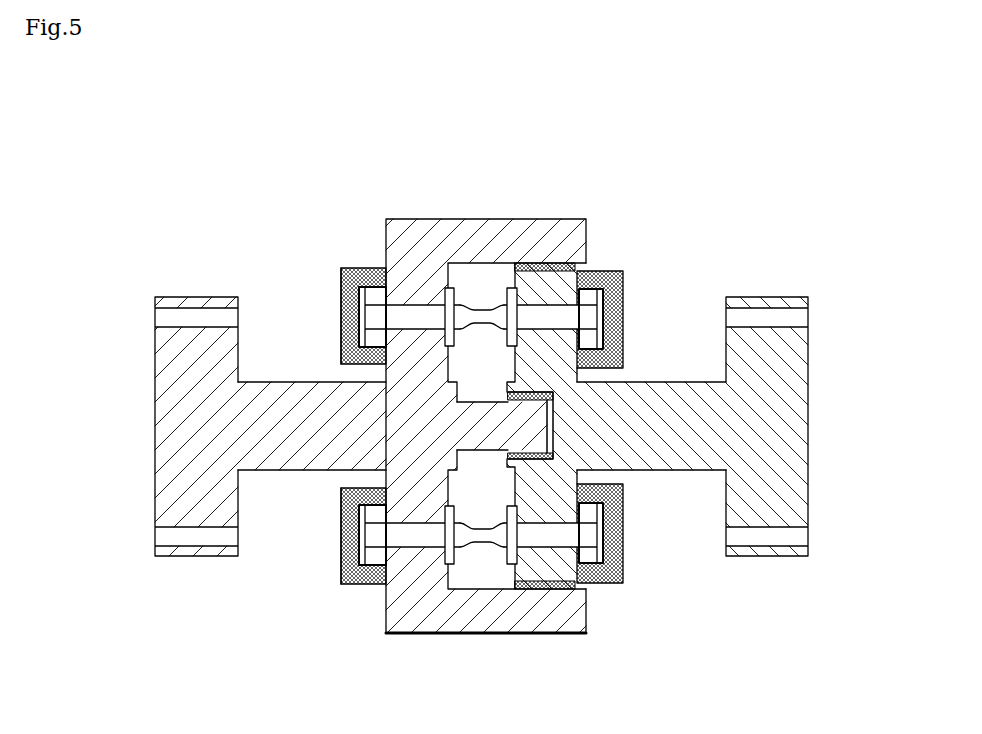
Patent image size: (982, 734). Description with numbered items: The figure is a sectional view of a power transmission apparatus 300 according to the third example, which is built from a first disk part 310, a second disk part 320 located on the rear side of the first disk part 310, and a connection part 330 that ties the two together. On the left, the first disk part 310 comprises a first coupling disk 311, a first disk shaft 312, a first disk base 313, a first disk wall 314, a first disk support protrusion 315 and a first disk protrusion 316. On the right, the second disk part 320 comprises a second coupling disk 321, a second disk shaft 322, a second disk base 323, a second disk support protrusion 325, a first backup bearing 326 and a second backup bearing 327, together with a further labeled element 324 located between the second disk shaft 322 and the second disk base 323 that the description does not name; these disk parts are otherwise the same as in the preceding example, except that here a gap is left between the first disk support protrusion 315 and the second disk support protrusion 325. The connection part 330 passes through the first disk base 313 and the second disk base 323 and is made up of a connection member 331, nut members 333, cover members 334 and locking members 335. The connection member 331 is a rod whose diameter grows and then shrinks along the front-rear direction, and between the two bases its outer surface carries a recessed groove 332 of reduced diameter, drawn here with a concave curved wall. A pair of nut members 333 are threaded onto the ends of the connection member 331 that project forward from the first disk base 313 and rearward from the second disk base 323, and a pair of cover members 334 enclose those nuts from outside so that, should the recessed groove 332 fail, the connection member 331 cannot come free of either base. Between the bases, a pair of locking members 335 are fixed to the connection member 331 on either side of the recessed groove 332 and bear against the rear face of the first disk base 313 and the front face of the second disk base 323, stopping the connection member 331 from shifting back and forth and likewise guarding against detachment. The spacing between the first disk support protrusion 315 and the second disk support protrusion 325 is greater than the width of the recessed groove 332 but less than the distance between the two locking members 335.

The power transmission apparatus 300 is at (120, 142).
The first disk part 310 is at (195, 570).
The first coupling disk 311 is at (175, 490).
The first disk shaft 312 is at (293, 452).
The first disk base 313 is at (386, 603).
The first disk wall 314 is at (485, 617).
The first disk support protrusion 315 is at (360, 583).
The first disk protrusion 316 is at (530, 487).
The second disk part 320 is at (783, 565).
The second coupling disk 321 is at (795, 488).
The second disk shaft 322 is at (708, 447).
The second disk base 323 is at (618, 496).
The connecting bracket 324 is at (556, 436).
The second disk support protrusion 325 is at (475, 530).
The first backup bearing 326 is at (548, 450).
The second backup bearing 327 is at (590, 583).
The connection part 330 is at (350, 260).
The connection member 331 is at (464, 311).
The recessed groove 332 is at (480, 307).
The nut member 333 is at (365, 322).
The cover member 334 is at (344, 296).
The locking member 335 is at (449, 302).